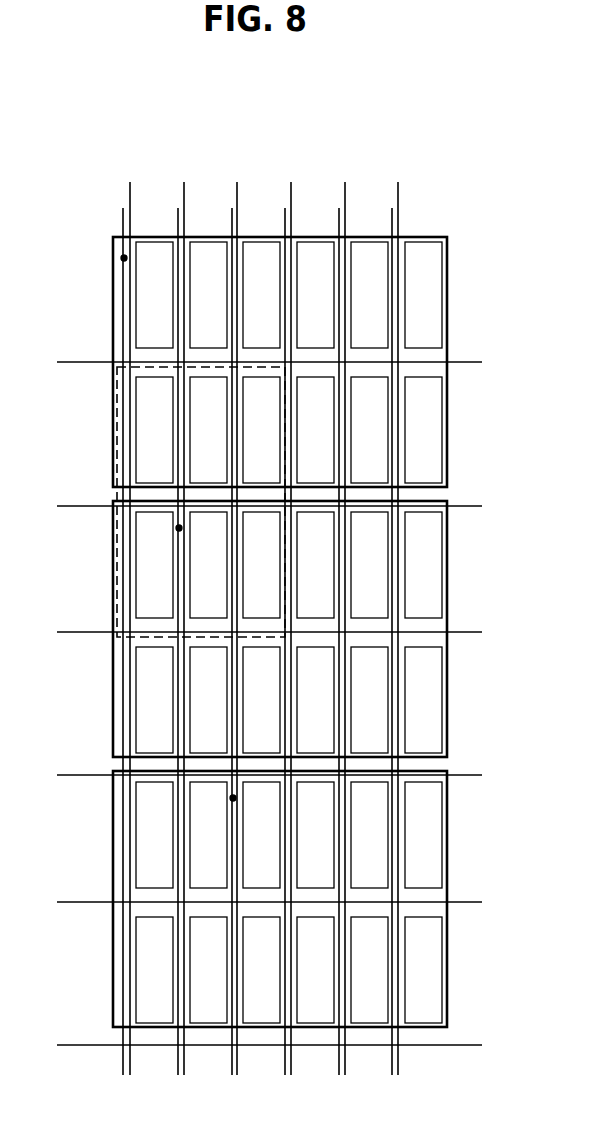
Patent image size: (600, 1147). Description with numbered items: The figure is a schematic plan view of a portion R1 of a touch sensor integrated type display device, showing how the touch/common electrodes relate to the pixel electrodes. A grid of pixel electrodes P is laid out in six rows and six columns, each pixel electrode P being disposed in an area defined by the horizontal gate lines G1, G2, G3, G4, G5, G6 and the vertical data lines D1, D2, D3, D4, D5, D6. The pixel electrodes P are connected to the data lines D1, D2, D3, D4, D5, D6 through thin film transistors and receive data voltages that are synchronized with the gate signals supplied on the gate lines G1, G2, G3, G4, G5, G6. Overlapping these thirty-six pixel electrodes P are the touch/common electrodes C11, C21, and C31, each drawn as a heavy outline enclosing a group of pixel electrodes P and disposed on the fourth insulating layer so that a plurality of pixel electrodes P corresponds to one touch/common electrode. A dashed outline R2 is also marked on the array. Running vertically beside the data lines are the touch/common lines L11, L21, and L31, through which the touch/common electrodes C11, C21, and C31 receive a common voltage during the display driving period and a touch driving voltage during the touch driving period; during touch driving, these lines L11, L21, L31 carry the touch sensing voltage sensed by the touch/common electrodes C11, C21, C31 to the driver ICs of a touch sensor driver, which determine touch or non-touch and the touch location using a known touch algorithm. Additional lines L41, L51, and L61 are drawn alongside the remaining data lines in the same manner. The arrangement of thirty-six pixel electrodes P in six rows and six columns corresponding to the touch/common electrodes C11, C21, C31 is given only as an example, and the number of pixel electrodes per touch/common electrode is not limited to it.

The portion R1 is at (97, 126).
The sub-region of pixels R2 is at (115, 399).
The touch/common electrode C11 is at (113, 295).
The touch/common electrode C21 is at (113, 565).
The touch/common electrode C31 is at (115, 835).
The pixel electrode P is at (289, 632).
The data line D1 is at (128, 617).
The data line D2 is at (182, 617).
The data line D3 is at (235, 617).
The data line D4 is at (289, 617).
The data line D5 is at (343, 617).
The data line D6 is at (396, 617).
The touch/common line L11 is at (106, 636).
The touch/common line L21 is at (161, 636).
The touch/common line L31 is at (215, 636).
The fourth sensing line L41 is at (266, 636).
The fifth sensing line L51 is at (320, 636).
The sixth sensing line L61 is at (373, 636).
The gate line G1 is at (257, 364).
The gate line G2 is at (257, 508).
The gate line G3 is at (257, 634).
The gate line G4 is at (257, 777).
The gate line G5 is at (257, 904).
The gate line G6 is at (257, 1047).